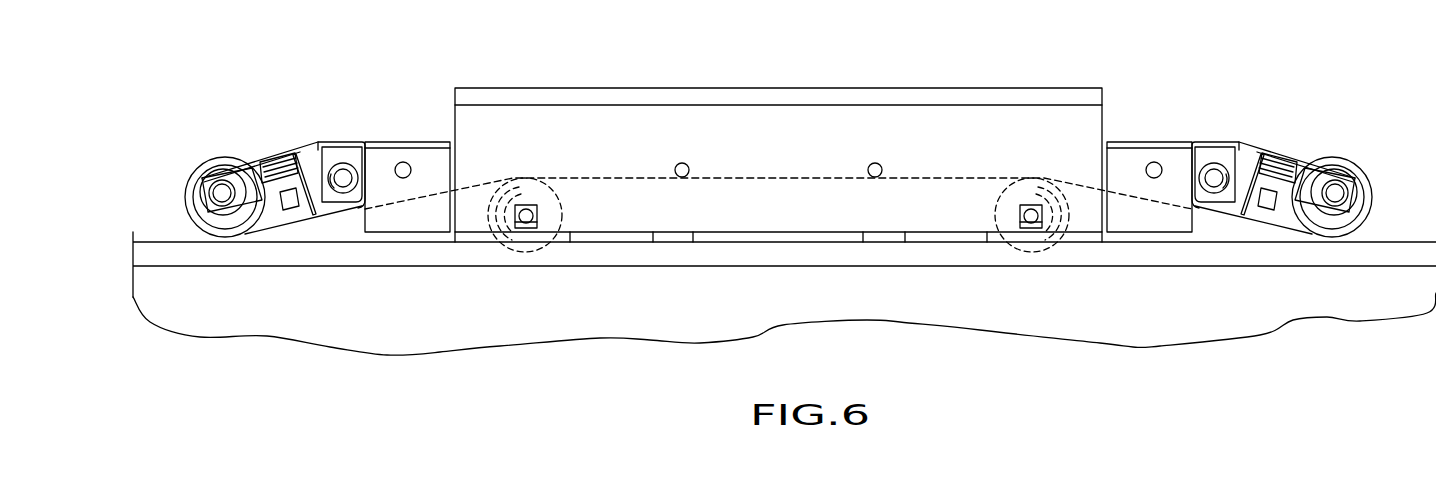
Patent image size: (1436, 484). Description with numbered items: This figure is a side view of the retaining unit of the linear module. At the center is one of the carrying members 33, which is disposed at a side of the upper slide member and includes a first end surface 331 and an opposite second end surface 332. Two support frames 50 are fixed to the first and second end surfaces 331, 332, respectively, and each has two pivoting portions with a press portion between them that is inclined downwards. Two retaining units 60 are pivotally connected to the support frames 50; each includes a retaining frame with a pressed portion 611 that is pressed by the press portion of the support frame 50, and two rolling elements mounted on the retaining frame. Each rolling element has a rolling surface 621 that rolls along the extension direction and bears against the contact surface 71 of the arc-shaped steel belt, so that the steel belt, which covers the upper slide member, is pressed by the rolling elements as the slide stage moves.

The carrying member 33 is at (788, 125).
The first end surface 331 is at (453, 132).
The second end surface 332 is at (1105, 127).
The support frame 50 is at (350, 138).
The retaining unit 60 is at (767, 140).
The pressed portion 611 is at (262, 155).
The rolling surface 621 is at (192, 222).
The contact surface 71 is at (340, 225).